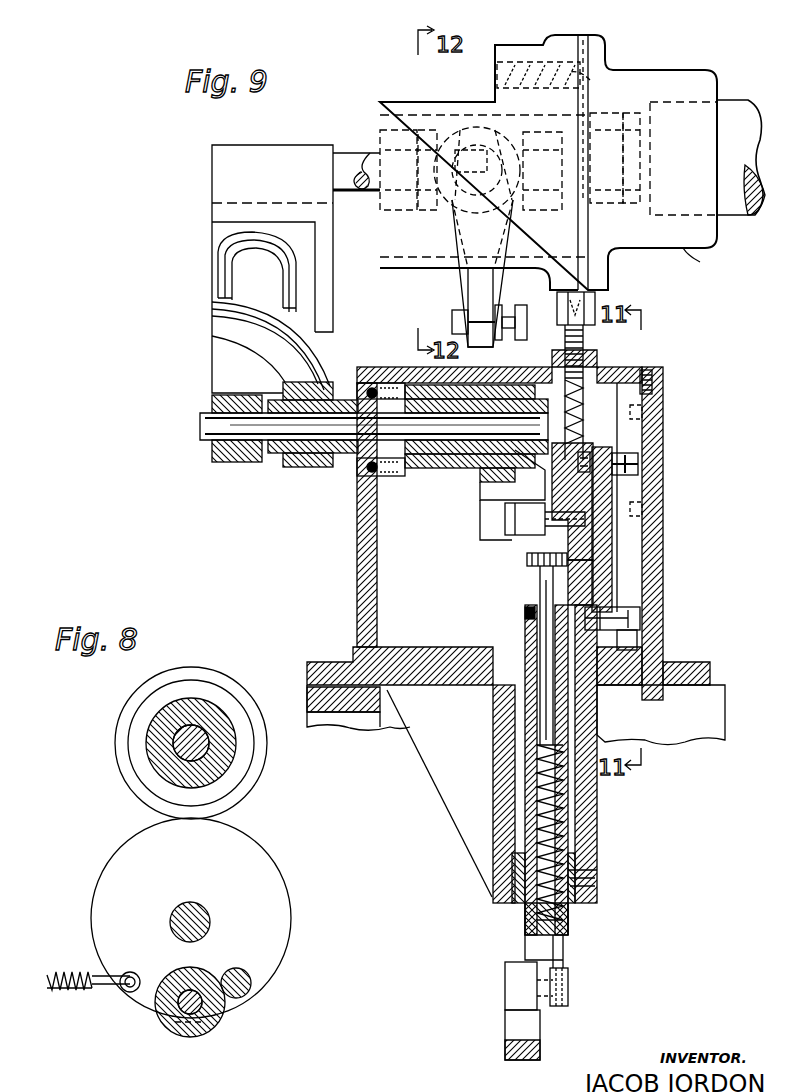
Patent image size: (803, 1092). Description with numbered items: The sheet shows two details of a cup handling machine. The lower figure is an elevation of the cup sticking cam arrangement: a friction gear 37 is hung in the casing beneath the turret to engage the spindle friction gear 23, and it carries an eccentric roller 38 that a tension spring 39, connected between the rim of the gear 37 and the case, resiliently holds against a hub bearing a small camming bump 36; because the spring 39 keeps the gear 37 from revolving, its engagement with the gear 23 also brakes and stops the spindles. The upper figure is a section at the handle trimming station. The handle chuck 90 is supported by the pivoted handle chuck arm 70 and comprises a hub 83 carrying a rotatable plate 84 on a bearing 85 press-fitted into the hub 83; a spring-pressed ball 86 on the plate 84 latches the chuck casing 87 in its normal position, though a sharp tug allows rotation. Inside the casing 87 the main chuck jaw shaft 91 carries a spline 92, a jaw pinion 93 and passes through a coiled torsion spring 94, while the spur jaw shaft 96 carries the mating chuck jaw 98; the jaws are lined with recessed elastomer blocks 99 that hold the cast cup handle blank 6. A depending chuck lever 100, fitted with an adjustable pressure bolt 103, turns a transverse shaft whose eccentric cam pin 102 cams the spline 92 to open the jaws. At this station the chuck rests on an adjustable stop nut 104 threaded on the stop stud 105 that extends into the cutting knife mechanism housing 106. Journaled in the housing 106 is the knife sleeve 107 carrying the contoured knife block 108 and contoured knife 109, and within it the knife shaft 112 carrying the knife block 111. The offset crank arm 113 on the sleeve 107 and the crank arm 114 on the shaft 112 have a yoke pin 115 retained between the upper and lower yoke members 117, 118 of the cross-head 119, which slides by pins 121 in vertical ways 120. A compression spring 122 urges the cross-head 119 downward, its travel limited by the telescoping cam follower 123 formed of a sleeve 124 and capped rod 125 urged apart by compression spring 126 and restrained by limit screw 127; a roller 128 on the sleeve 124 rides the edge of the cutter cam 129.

In FIG. 9, the cast cup handle blank 6 is at (224, 268).
In FIG. 8, the friction gear 23 is at (235, 780).
In FIG. 8, the camming bump 36 is at (205, 935).
In FIG. 8, the friction gear 37 is at (100, 890).
In FIG. 8, the eccentric roller 38 is at (252, 986).
In FIG. 8, the tension spring 39 is at (70, 995).
In FIG. 9, the handle chuck arm 70 is at (744, 112).
In FIG. 9, the hub 83 is at (706, 82).
In FIG. 9, the rotatable plate 84 is at (588, 45).
In FIG. 9, the bearing 85 is at (620, 120).
In FIG. 9, the spring-pressed ball 86 is at (600, 75).
In FIG. 9, the chuck casing 87 is at (482, 105).
In FIG. 9, the handle chuck 90 is at (690, 258).
In FIG. 9, the main chuck jaw shaft 91 is at (370, 152).
In FIG. 9, the spline 92 is at (512, 205).
In FIG. 9, the jaw pinion 93 is at (447, 218).
In FIG. 9, the coiled torsion spring 94 is at (446, 125).
In FIG. 9, the spur jaw shaft 96 is at (340, 150).
In FIG. 9, the chuck jaw 98 is at (218, 212).
In FIG. 9, the recessed block 99 is at (222, 237).
In FIG. 9, the chuck lever 100 is at (484, 287).
In FIG. 9, the eccentric cam pin 102 is at (510, 148).
In FIG. 9, the adjustable pressure bolt 103 is at (520, 332).
In FIG. 9, the adjustable stop nut 104 is at (596, 312).
In FIG. 9, the stop stud 105 is at (590, 352).
In FIG. 9, the cutting knife mechanism housing 106 is at (664, 445).
In FIG. 9, the knife sleeve 107 is at (274, 464).
In FIG. 9, the contoured knife block 108 is at (216, 376).
In FIG. 9, the contoured knife 109 is at (214, 306).
In FIG. 9, the knife block 111 is at (216, 464).
In FIG. 9, the knife shaft 112 is at (206, 441).
In FIG. 9, the offset crank arm 113 is at (507, 486).
In FIG. 9, the crank arm 114 is at (552, 468).
In FIG. 9, the yoke pin 115 is at (512, 538).
In FIG. 9, the upper yoke member 117 is at (588, 450).
In FIG. 9, the lower yoke member 118 is at (527, 560).
In FIG. 9, the cross-head 119 is at (612, 532).
In FIG. 9, the vertical way 120 is at (627, 650).
In FIG. 9, the pin 121 is at (626, 453).
In FIG. 9, the compression spring 122 is at (585, 420).
In FIG. 9, the telescoping cam follower 123 is at (575, 952).
In FIG. 9, the sleeve 124 is at (524, 920).
In FIG. 9, the capped rod 125 is at (540, 630).
In FIG. 9, the compression spring 126 is at (560, 824).
In FIG. 9, the limit screw 127 is at (525, 612).
In FIG. 9, the roller 128 is at (505, 978).
In FIG. 9, the cutter cam 129 is at (505, 1035).